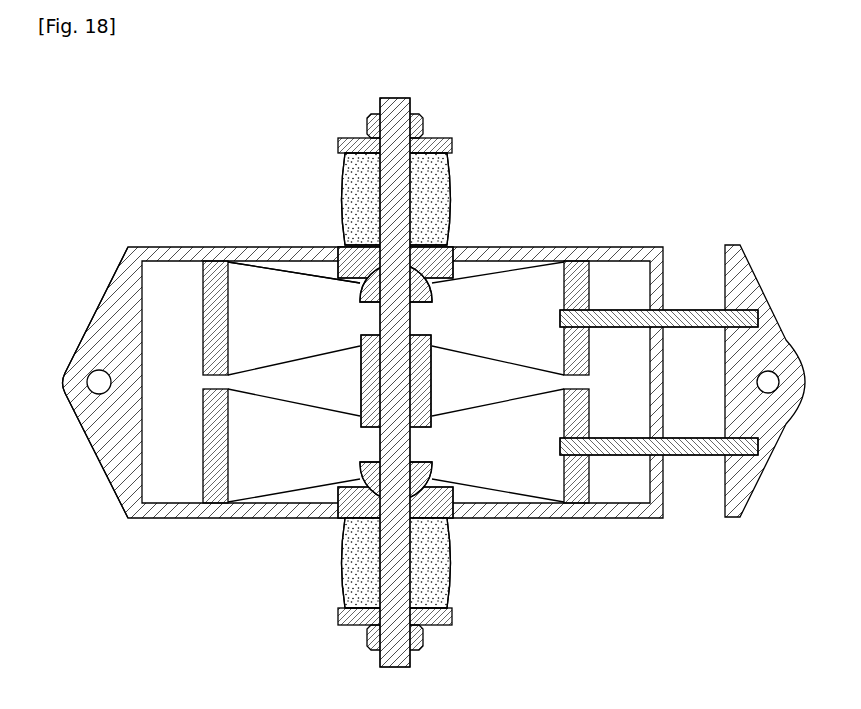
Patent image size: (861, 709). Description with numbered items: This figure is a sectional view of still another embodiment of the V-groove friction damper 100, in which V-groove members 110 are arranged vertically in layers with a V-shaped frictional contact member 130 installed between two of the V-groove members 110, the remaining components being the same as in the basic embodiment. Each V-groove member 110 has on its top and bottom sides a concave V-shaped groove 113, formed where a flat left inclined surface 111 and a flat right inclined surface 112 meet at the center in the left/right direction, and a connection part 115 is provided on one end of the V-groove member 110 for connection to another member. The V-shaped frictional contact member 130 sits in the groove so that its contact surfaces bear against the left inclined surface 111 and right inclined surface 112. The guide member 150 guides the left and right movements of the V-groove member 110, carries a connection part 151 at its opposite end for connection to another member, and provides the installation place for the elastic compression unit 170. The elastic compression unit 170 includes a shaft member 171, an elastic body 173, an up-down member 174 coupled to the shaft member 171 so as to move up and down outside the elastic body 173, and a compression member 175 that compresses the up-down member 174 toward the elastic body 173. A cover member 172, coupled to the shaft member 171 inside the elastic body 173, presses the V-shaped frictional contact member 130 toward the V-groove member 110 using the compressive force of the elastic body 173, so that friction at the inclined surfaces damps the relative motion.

The V-groove friction damper 100 is at (637, 187).
The V-groove member 110 is at (278, 472).
The left inclined surface 111 is at (280, 268).
The right inclined surface 112 is at (503, 259).
The V-shaped groove 113 is at (312, 268).
The connection part 115 is at (757, 292).
The V-shaped frictional contact member 130 is at (435, 298).
The guide member 150 is at (170, 520).
The connection part 151 is at (102, 450).
The elastic compression unit 170 is at (458, 139).
The shaft member 171 is at (409, 100).
The cover member 172 is at (322, 268).
The elastic body 173 is at (447, 200).
The up-down member 174 is at (340, 150).
The compression member 175 is at (368, 137).